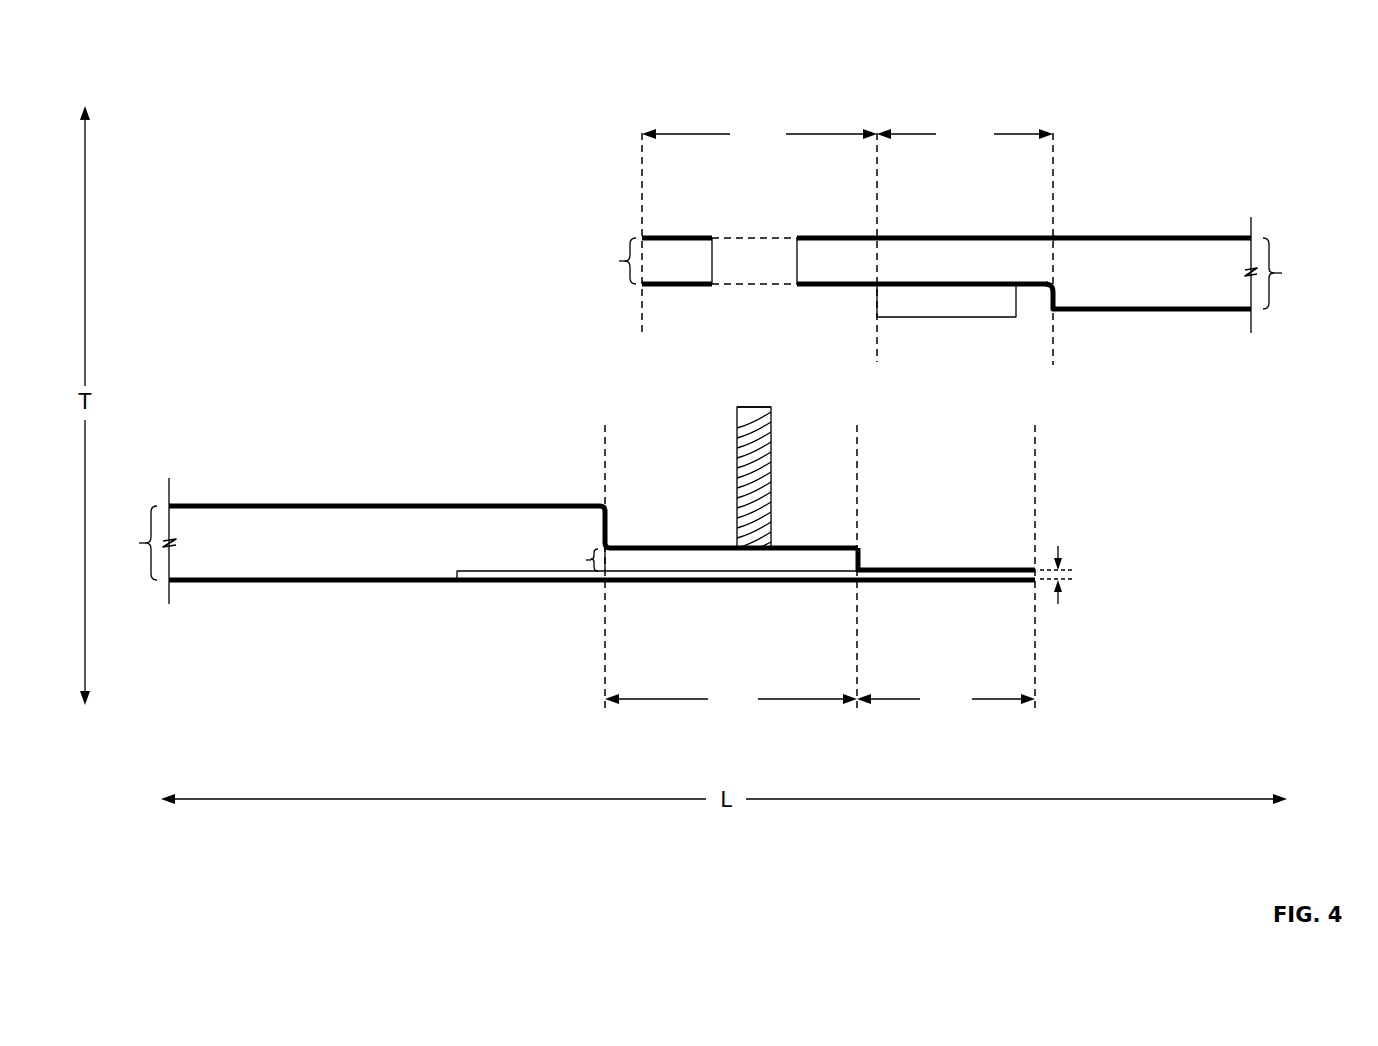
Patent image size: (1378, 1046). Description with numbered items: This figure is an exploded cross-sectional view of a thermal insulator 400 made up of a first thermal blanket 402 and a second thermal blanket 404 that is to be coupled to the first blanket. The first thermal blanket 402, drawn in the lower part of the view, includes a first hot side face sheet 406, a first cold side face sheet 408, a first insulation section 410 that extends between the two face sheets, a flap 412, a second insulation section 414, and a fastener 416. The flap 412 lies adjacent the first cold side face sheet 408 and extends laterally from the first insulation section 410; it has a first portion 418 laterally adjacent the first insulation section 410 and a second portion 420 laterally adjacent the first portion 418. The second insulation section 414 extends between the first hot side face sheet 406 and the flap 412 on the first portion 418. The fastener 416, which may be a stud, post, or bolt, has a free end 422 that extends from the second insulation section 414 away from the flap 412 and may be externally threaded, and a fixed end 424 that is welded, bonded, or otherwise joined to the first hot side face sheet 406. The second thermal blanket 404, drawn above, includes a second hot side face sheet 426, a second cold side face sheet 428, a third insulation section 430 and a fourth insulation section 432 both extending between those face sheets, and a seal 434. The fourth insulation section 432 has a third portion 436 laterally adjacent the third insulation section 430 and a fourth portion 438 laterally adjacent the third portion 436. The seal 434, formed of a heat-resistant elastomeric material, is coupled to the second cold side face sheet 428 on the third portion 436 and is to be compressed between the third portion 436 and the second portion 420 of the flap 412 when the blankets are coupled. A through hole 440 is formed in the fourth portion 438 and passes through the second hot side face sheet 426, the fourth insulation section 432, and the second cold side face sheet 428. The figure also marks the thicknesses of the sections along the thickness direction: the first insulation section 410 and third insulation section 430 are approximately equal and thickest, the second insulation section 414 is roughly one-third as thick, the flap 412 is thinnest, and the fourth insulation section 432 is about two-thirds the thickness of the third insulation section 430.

The thermal insulator 400 is at (1160, 31).
The first thermal blanket 402 is at (606, 540).
The second thermal blanket 404 is at (953, 258).
The first hot side face sheet 406 is at (290, 504).
The first cold side face sheet 408 is at (290, 583).
The first insulation section 410 is at (355, 528).
The flap 412 is at (965, 570).
The second insulation section 414 is at (678, 563).
The fastener 416 is at (737, 468).
The first portion 418 is at (731, 700).
The second portion 420 is at (946, 700).
The free end 422 is at (756, 406).
The fixed end 424 is at (751, 547).
The second hot side face sheet 426 is at (1130, 238).
The second cold side face sheet 428 is at (1125, 311).
The third insulation section 430 is at (1195, 277).
The fourth insulation section 432 is at (945, 252).
The seal 434 is at (945, 300).
The third portion 436 is at (965, 135).
The fourth portion 438 is at (759, 135).
The through hole 440 is at (713, 250).